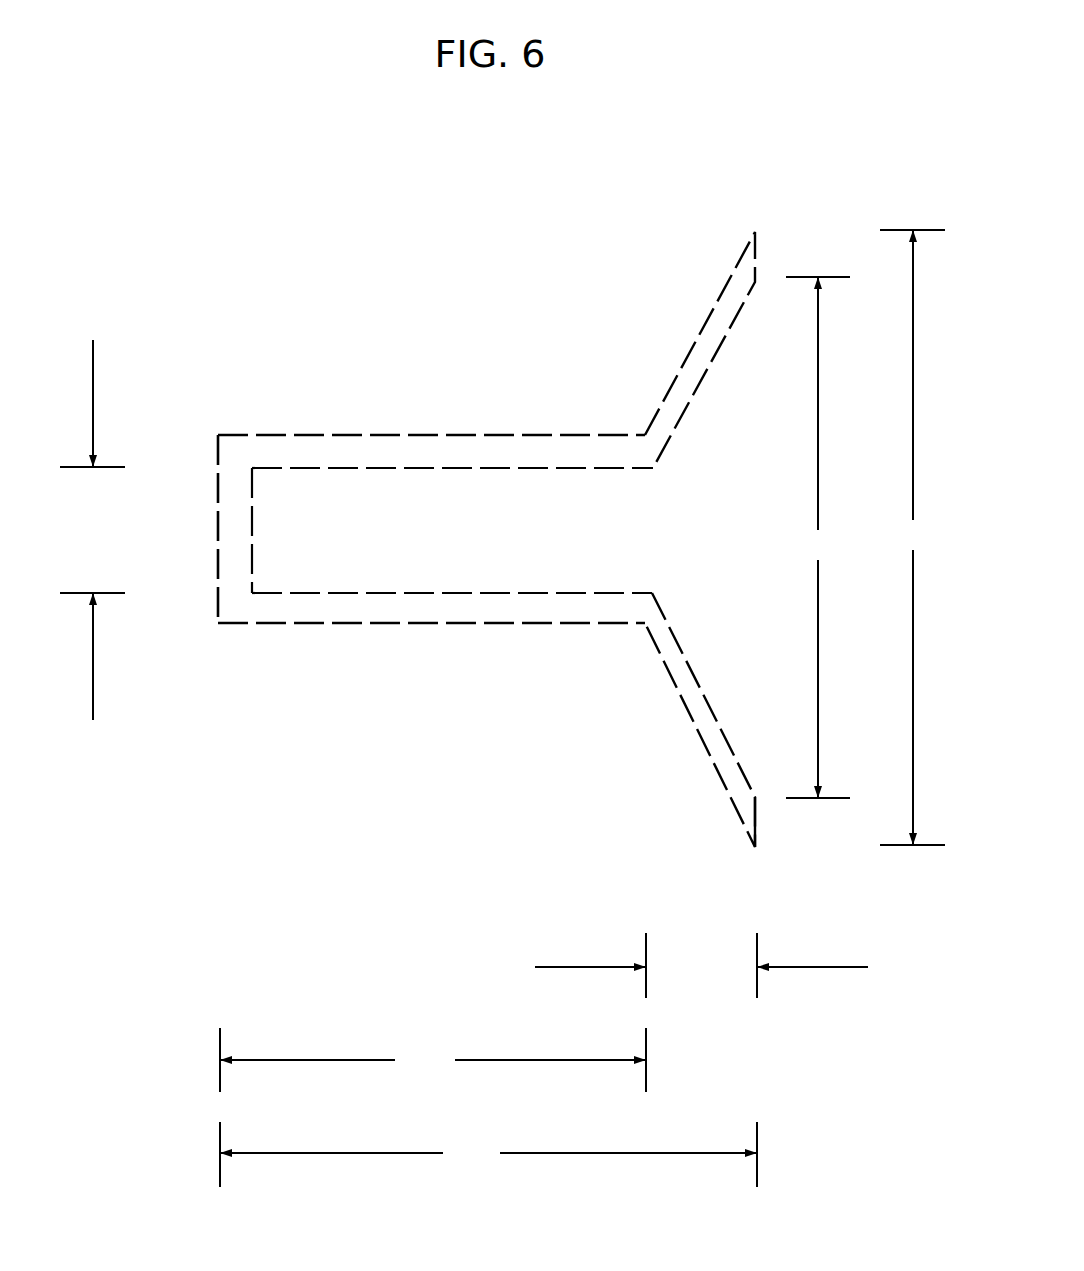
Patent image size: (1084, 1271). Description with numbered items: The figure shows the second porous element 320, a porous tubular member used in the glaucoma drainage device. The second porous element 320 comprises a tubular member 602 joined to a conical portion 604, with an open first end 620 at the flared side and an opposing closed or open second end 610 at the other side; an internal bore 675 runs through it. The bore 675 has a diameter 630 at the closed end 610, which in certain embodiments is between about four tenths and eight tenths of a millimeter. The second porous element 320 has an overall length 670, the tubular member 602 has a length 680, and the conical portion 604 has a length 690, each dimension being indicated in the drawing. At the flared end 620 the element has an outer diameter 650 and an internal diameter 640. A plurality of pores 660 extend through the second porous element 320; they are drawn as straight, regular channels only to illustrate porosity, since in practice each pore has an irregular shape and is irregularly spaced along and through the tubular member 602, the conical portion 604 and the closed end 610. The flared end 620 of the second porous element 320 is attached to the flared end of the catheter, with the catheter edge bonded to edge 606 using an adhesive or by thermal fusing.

The second porous element 320 is at (558, 561).
The tubular member 602 is at (443, 450).
The conical portion 604 is at (723, 308).
The edge 606 is at (757, 825).
The second end 610 is at (220, 420).
The first end 620 is at (755, 847).
The diameter 630 is at (92, 530).
The internal diameter 640 is at (818, 537).
The outer diameter 650 is at (912, 537).
The pores 660 is at (285, 427).
The length 670 is at (488, 1154).
The internal bore 675 is at (452, 530).
The length 680 is at (433, 1060).
The length 690 is at (701, 965).